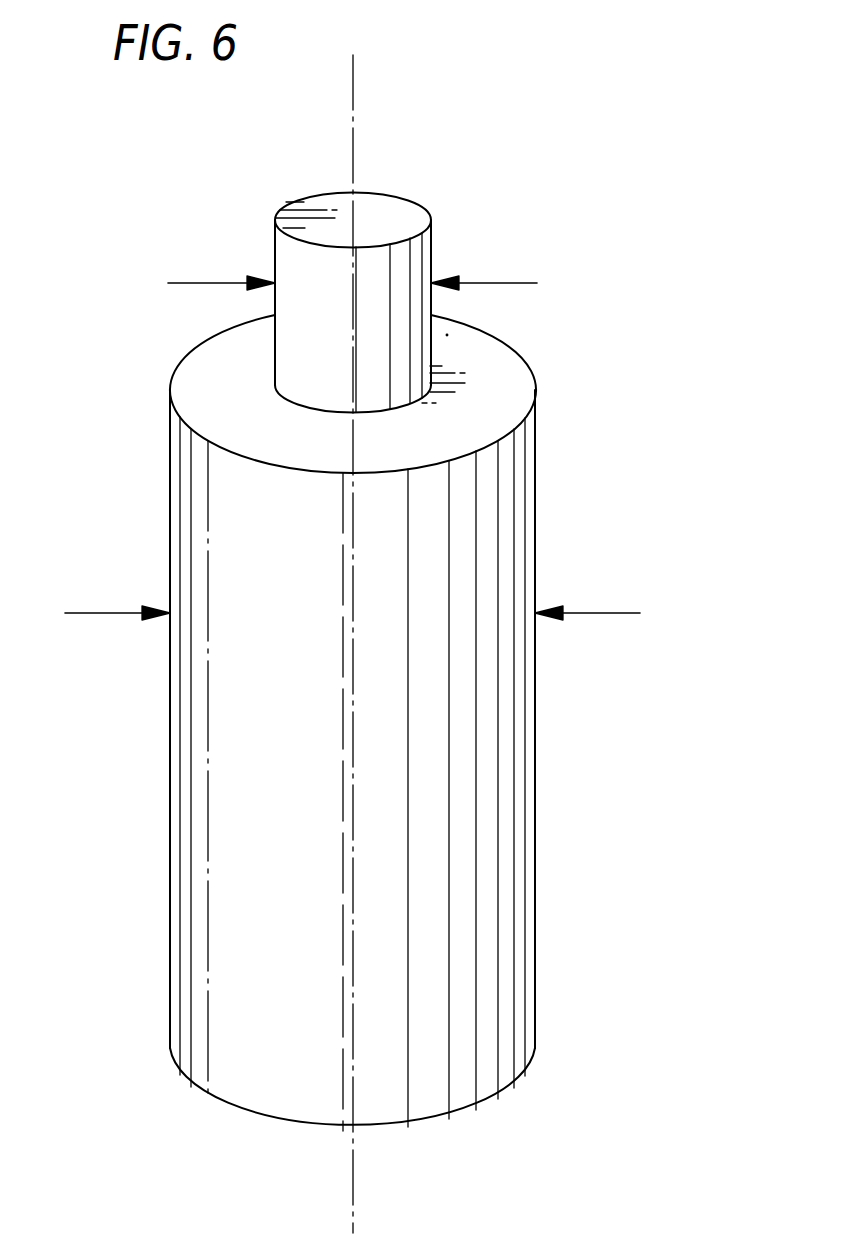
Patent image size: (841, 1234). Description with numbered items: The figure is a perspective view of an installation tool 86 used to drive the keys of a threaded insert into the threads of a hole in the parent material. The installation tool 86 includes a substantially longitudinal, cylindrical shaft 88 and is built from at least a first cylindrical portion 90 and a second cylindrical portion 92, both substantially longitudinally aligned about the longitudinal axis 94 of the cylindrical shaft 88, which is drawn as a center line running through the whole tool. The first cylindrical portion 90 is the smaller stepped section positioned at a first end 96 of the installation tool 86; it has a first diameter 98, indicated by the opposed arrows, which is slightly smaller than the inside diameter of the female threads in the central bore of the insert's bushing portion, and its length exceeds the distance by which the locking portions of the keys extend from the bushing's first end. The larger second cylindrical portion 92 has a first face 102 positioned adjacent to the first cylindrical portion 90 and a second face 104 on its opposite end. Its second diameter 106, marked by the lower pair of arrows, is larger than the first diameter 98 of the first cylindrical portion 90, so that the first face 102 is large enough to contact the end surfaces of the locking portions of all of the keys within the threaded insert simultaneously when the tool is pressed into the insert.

The installation tool 86 is at (412, 644).
The cylindrical shaft 88 is at (533, 934).
The first cylindrical portion 90 is at (428, 273).
The second cylindrical portion 92 is at (532, 681).
The longitudinal axis 94 is at (353, 160).
The first end 96 is at (456, 198).
The first diameter 98 is at (212, 283).
The first face 102 is at (507, 390).
The second face 104 is at (422, 1124).
The second diameter 106 is at (108, 613).